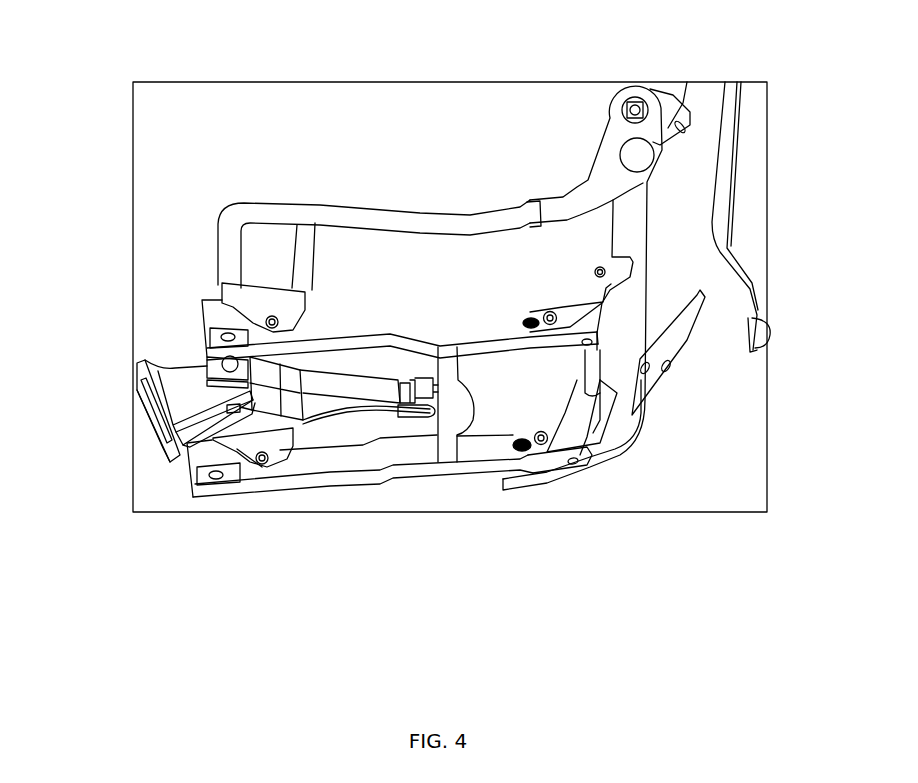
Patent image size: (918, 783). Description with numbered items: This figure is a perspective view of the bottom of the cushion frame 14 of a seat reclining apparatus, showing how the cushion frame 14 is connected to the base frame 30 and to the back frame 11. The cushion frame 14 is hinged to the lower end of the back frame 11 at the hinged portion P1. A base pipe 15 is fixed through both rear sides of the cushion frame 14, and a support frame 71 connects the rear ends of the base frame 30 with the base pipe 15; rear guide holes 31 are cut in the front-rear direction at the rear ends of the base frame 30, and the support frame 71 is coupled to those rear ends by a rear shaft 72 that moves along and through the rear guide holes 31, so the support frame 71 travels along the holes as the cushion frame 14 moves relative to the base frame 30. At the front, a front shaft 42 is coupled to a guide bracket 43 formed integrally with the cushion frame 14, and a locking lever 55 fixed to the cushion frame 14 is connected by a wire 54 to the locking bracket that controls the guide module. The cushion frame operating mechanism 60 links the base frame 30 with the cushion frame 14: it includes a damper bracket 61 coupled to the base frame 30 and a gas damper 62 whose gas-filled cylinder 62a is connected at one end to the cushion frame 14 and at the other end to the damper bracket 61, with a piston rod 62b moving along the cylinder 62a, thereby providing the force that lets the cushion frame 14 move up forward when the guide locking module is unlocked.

The back frame 11 is at (683, 275).
The cushion frame 14 is at (305, 210).
The base pipe 15 is at (627, 307).
The base frame 30 is at (483, 328).
The rear guide holes 31 is at (545, 311).
The front shaft 42 is at (273, 315).
The guide bracket 43 is at (237, 293).
The wire 54 is at (330, 417).
The locking lever 55 is at (143, 412).
The cushion frame operating mechanism 60 is at (311, 395).
The damper bracket 61 is at (453, 400).
The gas damper 62 is at (340, 158).
The cylinder 62a is at (318, 372).
The piston rod 62b is at (400, 378).
The support frame 71 is at (588, 280).
The rear shaft 72 is at (553, 303).
The hinged portion P1 is at (636, 102).